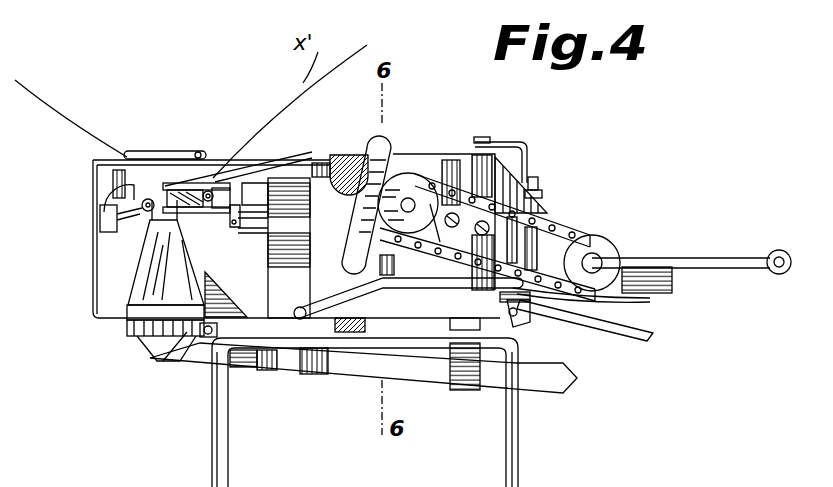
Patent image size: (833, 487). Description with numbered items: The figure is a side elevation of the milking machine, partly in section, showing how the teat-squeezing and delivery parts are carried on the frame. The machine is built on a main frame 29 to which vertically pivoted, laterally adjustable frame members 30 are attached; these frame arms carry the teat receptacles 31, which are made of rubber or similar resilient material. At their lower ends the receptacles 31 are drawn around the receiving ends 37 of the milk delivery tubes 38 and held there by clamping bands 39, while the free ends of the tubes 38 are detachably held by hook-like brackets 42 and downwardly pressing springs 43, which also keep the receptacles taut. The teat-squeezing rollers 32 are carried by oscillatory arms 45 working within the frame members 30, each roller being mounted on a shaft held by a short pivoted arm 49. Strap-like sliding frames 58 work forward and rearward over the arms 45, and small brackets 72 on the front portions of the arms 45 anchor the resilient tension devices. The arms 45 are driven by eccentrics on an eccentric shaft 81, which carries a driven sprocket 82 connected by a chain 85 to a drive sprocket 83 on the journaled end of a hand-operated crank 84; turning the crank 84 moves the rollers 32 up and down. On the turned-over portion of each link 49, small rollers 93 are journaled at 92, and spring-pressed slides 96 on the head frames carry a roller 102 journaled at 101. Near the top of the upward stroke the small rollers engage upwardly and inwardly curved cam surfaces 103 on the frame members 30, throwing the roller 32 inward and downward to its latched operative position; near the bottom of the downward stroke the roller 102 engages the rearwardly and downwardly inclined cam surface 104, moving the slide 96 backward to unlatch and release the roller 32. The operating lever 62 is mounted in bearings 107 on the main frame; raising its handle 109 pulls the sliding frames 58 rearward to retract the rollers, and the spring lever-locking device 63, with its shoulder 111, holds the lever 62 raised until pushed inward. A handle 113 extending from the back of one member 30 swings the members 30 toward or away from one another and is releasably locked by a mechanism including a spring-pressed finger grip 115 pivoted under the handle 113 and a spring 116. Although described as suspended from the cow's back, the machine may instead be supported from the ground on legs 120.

The main frame 29 is at (335, 155).
The frame members 30 is at (108, 322).
The teat receptacles 31 is at (176, 165).
The teat-squeezing rollers 32 is at (163, 151).
The receiving ends 37 is at (155, 338).
The milk delivery tubes 38 is at (350, 370).
The clamping bands 39 is at (180, 342).
The hook-like brackets 42 is at (466, 388).
The downwardly pressing springs 43 is at (437, 325).
The oscillatory arms 45 is at (247, 183).
The short arm 49 is at (120, 190).
The sliding frames 58 is at (262, 122).
The operating lever 62 is at (540, 178).
The lever-locking device 63 is at (385, 140).
The small brackets 72 is at (250, 187).
The eccentric shaft 81 is at (411, 201).
The driven sprocket 82 is at (404, 184).
The drive sprocket 83 is at (605, 243).
The hand-operated crank 84 is at (712, 258).
The chain 85 is at (572, 228).
The journal 92 is at (140, 204).
The small rollers 93 is at (130, 213).
The spring-pressed slides 96 is at (206, 191).
The journal 101 is at (230, 183).
The roller 102 is at (222, 212).
The cam surfaces 103 is at (124, 230).
The cam surface 104 is at (224, 298).
The bearings 107 is at (528, 315).
The handle 109 is at (300, 320).
The shoulder 111 is at (386, 264).
The handle 113 is at (672, 291).
The finger grip 115 is at (615, 336).
The spring 116 is at (636, 301).
The legs 120 is at (520, 450).